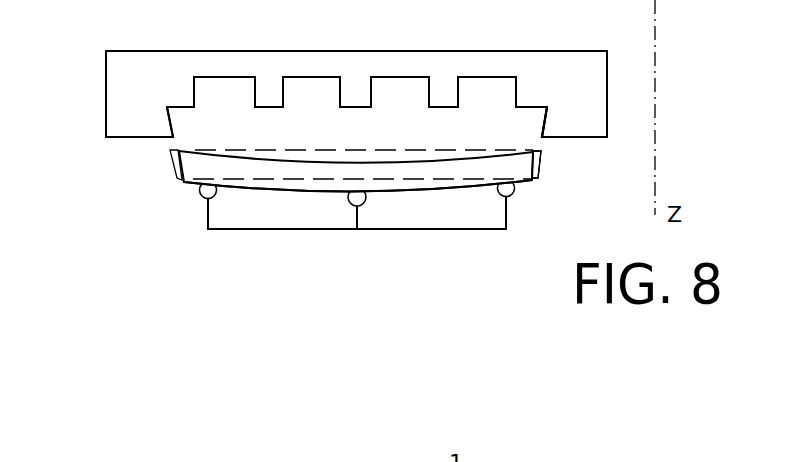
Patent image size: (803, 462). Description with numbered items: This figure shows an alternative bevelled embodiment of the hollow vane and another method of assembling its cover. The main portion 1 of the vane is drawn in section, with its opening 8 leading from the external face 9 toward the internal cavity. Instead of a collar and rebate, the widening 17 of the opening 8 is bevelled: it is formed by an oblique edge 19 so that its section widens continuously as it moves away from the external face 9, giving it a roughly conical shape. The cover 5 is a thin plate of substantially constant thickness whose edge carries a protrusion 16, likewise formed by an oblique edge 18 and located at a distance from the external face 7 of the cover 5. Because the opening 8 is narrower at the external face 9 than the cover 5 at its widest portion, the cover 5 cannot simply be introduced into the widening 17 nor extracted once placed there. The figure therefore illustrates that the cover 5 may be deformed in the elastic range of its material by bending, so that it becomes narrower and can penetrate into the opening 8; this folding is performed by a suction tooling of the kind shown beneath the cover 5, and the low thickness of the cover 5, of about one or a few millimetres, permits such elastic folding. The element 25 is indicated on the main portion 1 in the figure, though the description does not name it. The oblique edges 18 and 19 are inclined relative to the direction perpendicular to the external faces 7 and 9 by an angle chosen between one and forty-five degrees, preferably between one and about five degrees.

The main portion 1 is at (437, 46).
The cover 5 is at (526, 193).
The external face of the cover 7 is at (187, 183).
The opening 8 is at (176, 147).
The external face of the main portion 9 is at (113, 138).
The protrusion 16 is at (172, 162).
The widening 17 is at (167, 108).
The oblique edge 18 is at (540, 179).
The oblique edge 19 is at (548, 123).
The grooves 25 is at (457, 87).